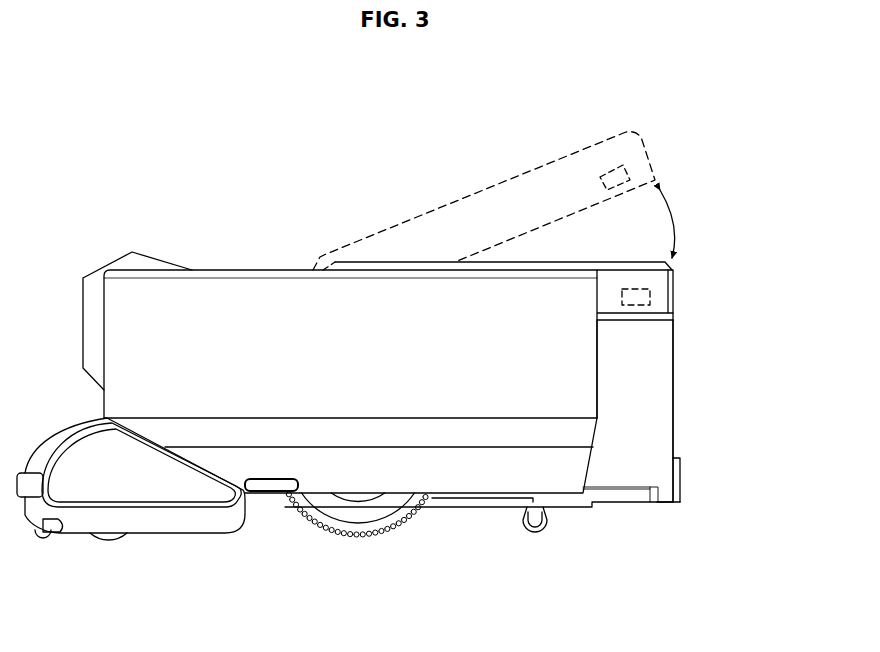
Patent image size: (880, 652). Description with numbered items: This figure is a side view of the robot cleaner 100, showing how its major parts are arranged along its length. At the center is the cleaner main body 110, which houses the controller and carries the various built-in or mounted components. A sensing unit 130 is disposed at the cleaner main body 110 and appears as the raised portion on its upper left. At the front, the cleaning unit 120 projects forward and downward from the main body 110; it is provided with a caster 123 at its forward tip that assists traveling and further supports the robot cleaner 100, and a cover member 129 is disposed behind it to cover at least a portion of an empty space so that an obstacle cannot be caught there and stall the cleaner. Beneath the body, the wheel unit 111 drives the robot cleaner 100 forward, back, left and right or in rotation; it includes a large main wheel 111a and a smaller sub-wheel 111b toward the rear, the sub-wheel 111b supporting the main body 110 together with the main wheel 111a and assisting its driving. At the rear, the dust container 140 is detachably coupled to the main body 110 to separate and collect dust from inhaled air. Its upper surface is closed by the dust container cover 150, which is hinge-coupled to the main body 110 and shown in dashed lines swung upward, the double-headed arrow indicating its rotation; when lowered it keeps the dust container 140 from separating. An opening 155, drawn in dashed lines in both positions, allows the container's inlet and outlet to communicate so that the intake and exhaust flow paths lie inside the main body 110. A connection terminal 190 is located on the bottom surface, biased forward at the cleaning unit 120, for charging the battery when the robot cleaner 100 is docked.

The robot cleaner 100 is at (184, 178).
The cleaner main body 110 is at (276, 306).
The wheel unit 111 is at (416, 572).
The main wheel 111a is at (382, 515).
The sub-wheel 111b is at (538, 536).
The cleaning unit 120 is at (173, 488).
The caster 123 is at (43, 532).
The cover member 129 is at (272, 487).
The sensing unit 130 is at (118, 257).
The dust container 140 is at (648, 400).
The dust container cover 150 is at (672, 277).
The opening 155 is at (622, 292).
The connection terminal 190 is at (63, 530).